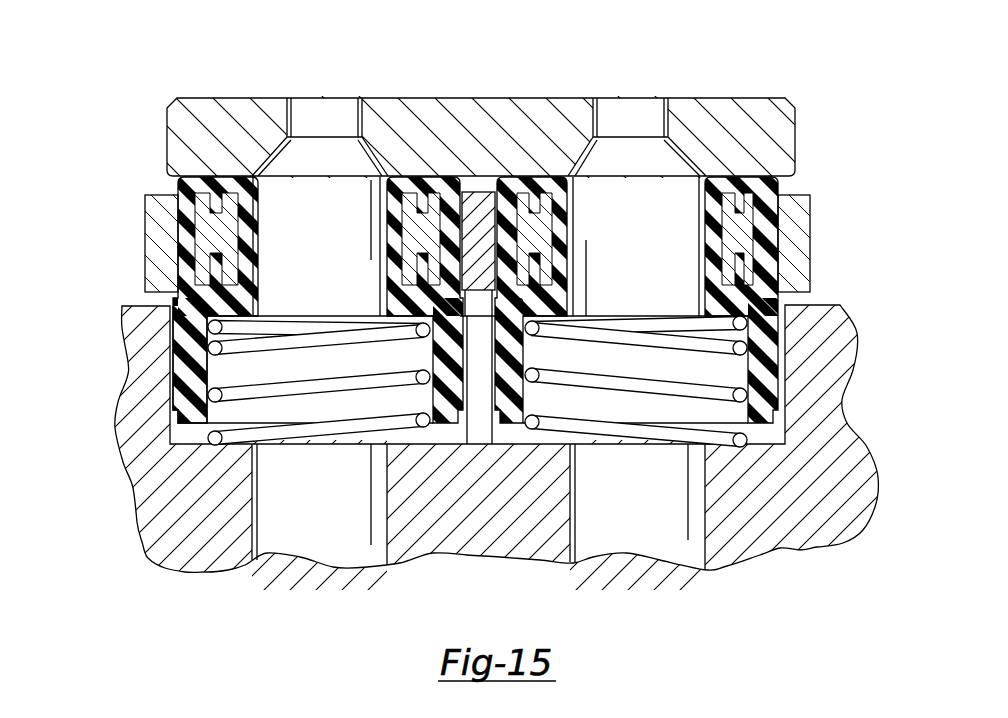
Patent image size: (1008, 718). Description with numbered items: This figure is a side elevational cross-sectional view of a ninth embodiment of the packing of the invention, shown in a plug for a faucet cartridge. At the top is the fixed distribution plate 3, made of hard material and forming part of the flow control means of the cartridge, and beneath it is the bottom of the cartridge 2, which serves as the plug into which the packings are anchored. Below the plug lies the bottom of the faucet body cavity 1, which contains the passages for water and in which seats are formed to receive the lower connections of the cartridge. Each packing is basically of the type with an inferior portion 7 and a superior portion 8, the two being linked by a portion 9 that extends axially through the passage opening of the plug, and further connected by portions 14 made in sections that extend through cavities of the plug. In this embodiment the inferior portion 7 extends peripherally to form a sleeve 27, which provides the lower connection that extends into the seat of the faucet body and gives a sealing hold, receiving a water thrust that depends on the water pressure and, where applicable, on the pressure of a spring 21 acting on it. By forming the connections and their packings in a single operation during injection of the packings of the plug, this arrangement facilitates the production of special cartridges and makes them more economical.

The bottom of faucet body cavity 1 is at (813, 527).
The bottom of cartridge 2 is at (798, 272).
The fixed distribution plate 3 is at (740, 126).
The inferior portion 7 is at (182, 293).
The superior portion 8 is at (212, 182).
The portion 9 is at (242, 250).
The portions 14 is at (187, 237).
The spring 21 is at (327, 387).
The sleeve 27 is at (182, 377).